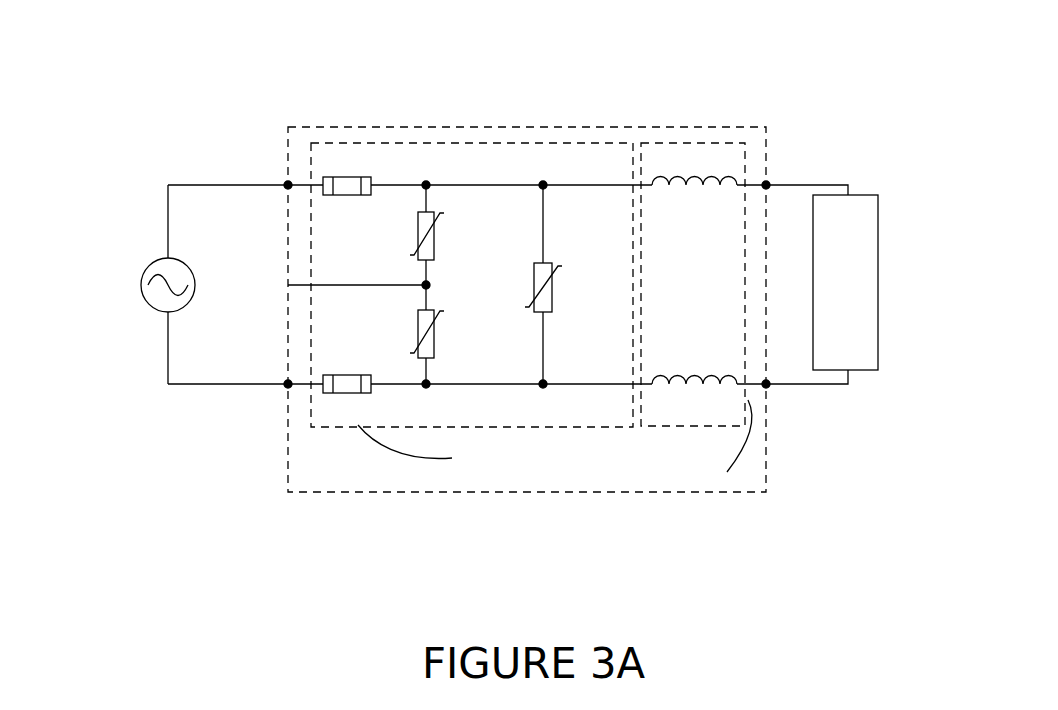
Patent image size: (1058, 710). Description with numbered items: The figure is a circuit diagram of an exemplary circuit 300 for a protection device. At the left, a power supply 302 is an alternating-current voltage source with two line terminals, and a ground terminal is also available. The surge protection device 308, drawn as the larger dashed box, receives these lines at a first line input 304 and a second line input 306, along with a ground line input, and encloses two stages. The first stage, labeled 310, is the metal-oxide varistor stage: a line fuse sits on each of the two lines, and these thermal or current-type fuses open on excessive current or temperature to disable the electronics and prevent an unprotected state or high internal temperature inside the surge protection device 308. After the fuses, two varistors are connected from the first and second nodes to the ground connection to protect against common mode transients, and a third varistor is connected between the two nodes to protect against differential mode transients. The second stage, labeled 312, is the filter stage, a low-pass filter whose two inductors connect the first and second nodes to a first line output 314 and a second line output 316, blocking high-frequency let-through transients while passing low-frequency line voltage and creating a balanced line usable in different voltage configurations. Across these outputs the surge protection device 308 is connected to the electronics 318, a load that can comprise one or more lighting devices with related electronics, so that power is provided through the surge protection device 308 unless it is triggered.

The circuit 300 is at (214, 73).
The power supply 302 is at (150, 265).
The first line input 304 is at (288, 183).
The second line input 306 is at (285, 386).
The surge protection device 308 is at (720, 123).
The Stage 1 310 is at (540, 428).
The Stage 2 312 is at (667, 427).
The first line output 314 is at (767, 184).
The second line output 316 is at (768, 385).
The electronics 318 is at (884, 262).